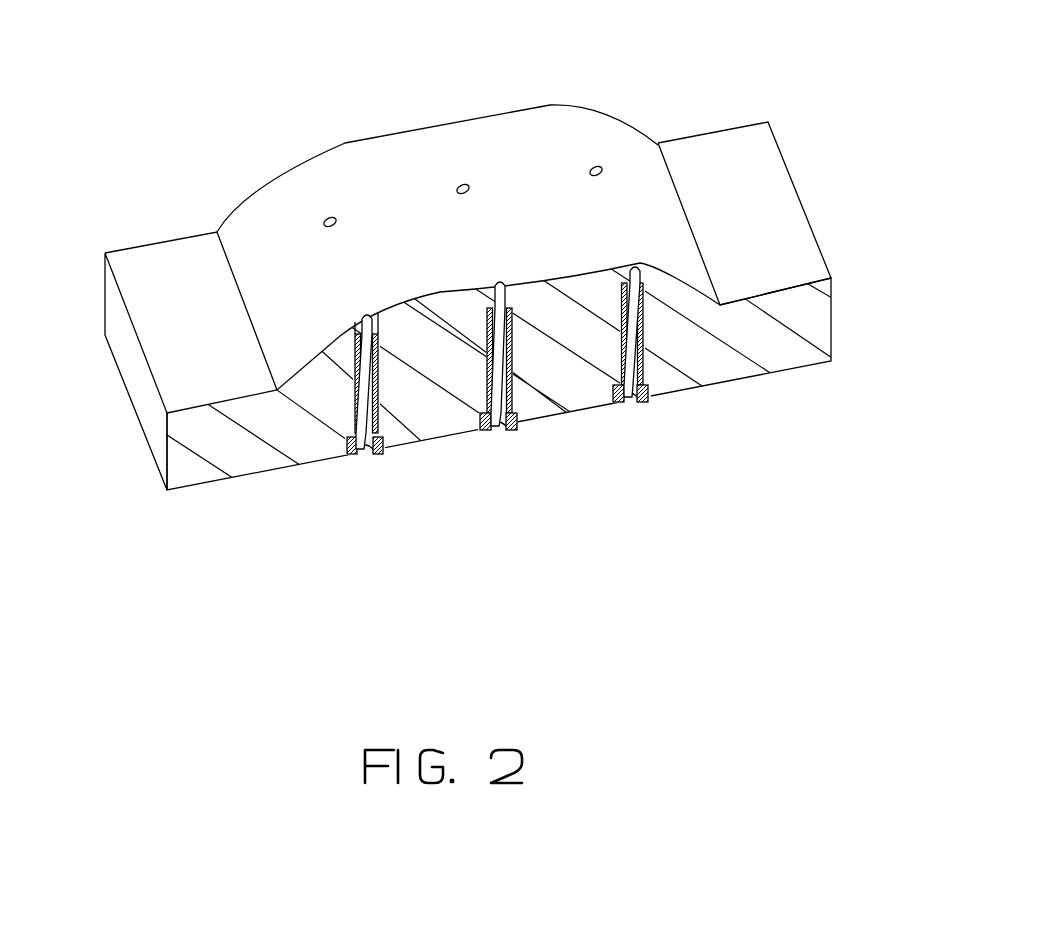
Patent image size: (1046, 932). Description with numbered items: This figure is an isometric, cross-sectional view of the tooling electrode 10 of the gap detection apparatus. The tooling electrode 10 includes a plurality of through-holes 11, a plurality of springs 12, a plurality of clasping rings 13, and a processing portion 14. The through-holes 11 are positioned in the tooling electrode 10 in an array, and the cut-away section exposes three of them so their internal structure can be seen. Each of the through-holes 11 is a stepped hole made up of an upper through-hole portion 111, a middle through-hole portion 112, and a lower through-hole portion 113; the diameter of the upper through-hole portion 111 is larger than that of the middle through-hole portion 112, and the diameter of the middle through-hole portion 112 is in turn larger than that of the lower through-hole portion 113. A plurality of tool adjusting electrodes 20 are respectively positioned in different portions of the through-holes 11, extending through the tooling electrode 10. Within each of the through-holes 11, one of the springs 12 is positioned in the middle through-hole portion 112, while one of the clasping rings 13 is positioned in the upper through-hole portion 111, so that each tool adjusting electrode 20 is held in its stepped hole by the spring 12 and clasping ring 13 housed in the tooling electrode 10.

The tooling electrode 10 is at (780, 344).
The through-holes 11 is at (327, 218).
The springs 12 is at (645, 340).
The clasping rings 13 is at (620, 404).
The processing portion 14 is at (615, 210).
The tool adjusting electrodes 20 is at (630, 398).
The upper through-hole portion 111 is at (347, 452).
The middle through-hole portion 112 is at (355, 378).
The lower through-hole portion 113 is at (363, 312).